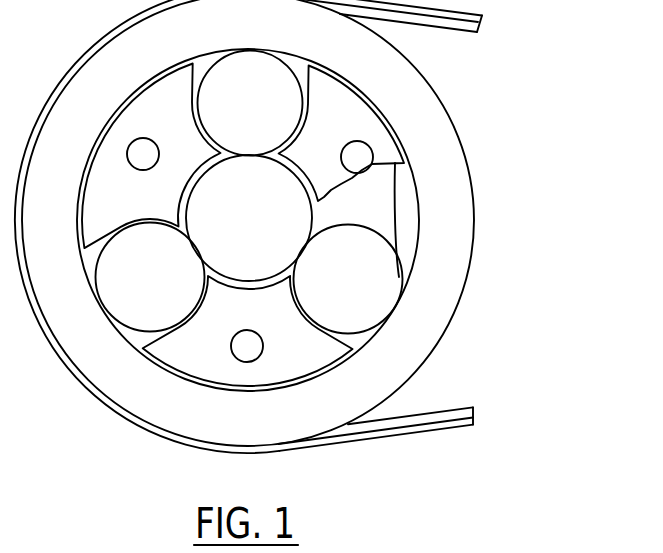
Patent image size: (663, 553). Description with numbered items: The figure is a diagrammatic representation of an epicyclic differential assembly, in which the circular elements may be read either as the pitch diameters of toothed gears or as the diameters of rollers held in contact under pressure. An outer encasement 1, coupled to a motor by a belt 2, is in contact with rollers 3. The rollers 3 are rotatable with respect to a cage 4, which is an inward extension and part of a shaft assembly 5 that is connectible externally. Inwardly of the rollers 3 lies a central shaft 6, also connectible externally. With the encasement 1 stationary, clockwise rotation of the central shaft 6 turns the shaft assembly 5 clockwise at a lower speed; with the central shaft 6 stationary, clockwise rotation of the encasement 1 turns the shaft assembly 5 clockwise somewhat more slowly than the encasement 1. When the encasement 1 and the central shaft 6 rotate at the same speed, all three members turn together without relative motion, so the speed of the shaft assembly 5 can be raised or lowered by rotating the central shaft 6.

The encasement 1 is at (437, 125).
The belt 2 is at (477, 33).
The rollers 3 is at (383, 289).
The cage 4 is at (311, 357).
The shaft assembly 5 is at (386, 230).
The central shaft 6 is at (293, 212).